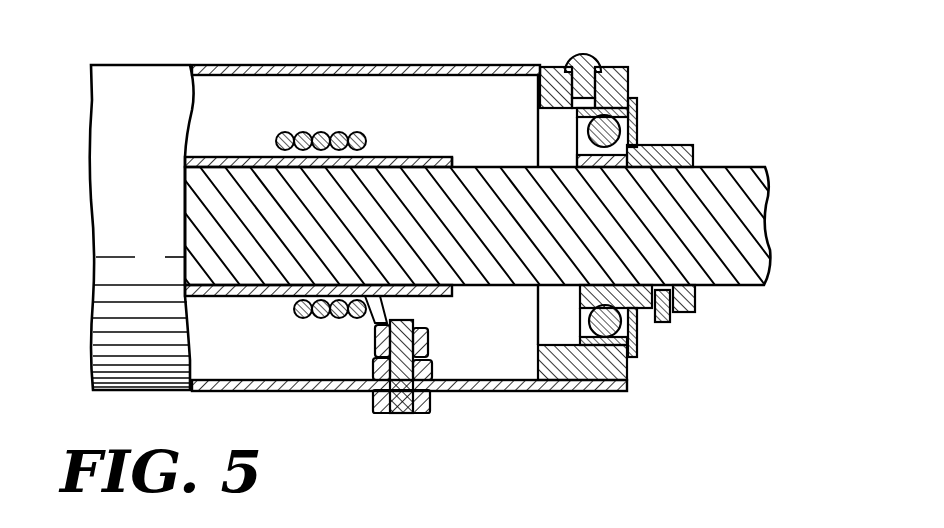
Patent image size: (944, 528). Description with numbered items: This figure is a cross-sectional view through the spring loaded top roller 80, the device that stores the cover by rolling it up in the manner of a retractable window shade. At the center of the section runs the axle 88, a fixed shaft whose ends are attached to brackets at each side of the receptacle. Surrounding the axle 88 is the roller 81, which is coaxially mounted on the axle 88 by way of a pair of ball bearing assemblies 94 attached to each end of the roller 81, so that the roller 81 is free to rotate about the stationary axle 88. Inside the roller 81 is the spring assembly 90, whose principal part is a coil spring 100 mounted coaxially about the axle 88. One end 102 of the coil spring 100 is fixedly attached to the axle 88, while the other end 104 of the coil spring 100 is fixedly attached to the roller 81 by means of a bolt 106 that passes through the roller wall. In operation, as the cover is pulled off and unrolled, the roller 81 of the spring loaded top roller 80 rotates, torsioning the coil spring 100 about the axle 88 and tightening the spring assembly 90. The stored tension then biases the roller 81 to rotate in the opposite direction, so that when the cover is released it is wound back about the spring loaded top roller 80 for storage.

The spring loaded top roller 80 is at (570, 402).
The roller 81 is at (518, 392).
The axle 88 is at (720, 272).
The spring assembly 90 is at (293, 345).
The ball bearing assemblies 94 is at (643, 340).
The coil spring 100 is at (370, 154).
The one end of the coil spring 102 is at (280, 150).
The other end of the coil spring 104 is at (373, 368).
The bolt 106 is at (393, 414).